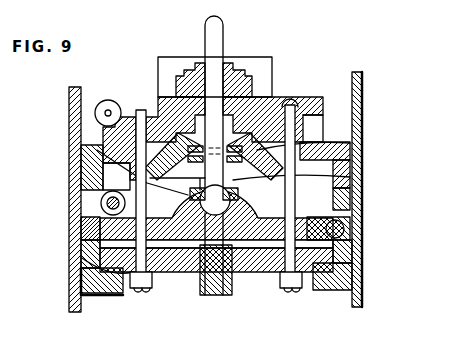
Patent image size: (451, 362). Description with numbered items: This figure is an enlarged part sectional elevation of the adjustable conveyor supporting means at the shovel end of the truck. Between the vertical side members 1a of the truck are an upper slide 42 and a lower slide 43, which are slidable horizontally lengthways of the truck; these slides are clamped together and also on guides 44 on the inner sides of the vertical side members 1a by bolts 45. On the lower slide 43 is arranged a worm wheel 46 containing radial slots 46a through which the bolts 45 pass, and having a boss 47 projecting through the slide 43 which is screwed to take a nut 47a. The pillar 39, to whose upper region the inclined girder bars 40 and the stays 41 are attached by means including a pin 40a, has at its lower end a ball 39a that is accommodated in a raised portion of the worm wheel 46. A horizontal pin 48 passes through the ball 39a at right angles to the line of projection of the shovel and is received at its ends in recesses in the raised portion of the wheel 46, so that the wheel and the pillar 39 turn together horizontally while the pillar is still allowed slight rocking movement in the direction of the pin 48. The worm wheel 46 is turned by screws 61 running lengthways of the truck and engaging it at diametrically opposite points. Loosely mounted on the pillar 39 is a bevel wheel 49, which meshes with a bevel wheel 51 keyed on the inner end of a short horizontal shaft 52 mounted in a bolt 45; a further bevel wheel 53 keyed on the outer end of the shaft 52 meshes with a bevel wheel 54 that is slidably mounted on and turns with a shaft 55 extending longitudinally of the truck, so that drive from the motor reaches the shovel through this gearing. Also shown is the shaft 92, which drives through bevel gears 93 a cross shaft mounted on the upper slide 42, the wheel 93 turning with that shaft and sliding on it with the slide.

The vertical side members 1a is at (363, 92).
The pillar 39 is at (218, 37).
The ball 39a is at (218, 296).
The inclined girder bars 40 is at (350, 171).
The pin 40a is at (350, 151).
The stays 41 is at (255, 99).
The upper slide 42 is at (157, 97).
The lower slide 43 is at (295, 276).
The guides 44 is at (86, 256).
The bolts 45 is at (69, 114).
The worm wheel 46 is at (352, 279).
The radial slots 46a is at (80, 283).
The boss 47 is at (236, 272).
The nut 47a is at (190, 270).
The horizontal pin 48 is at (146, 280).
The bevel wheel 49 is at (323, 117).
The bevel wheel 51 is at (177, 191).
The short horizontal shaft 52 is at (90, 224).
The bevel wheel 53 is at (100, 137).
The bevel wheel 54 is at (92, 170).
The shaft 55 is at (104, 199).
The screws 61 is at (82, 229).
The shaft 92 is at (69, 92).
The bevel gear 93 is at (95, 74).